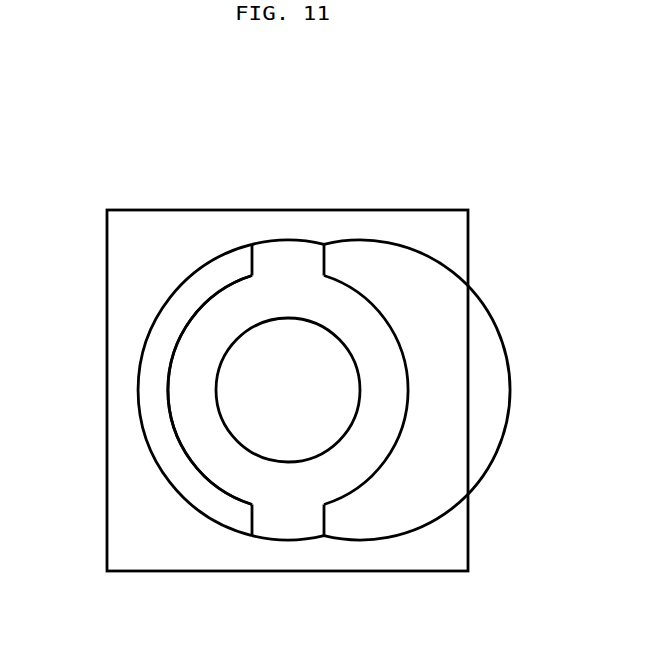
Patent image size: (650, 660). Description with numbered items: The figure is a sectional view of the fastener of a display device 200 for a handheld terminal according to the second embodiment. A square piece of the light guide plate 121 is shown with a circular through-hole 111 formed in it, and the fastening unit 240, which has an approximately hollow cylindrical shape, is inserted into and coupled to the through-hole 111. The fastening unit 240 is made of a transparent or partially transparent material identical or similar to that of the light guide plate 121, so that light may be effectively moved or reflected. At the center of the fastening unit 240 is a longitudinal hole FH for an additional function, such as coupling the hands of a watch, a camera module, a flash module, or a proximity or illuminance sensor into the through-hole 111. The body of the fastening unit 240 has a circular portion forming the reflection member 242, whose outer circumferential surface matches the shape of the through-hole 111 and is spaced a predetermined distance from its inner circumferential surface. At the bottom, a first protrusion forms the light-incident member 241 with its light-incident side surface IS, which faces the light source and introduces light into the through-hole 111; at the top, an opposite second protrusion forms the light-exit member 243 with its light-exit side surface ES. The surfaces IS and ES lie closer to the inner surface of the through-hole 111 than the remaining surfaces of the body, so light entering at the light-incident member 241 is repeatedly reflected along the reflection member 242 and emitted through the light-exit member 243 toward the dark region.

The display device 200 is at (73, 144).
The light guide plate 121 is at (442, 247).
The through-hole 111 is at (398, 506).
The fastening unit 240 is at (210, 290).
The light-incident member 241 is at (286, 522).
The reflection member 242 is at (192, 388).
The light-exit member 243 is at (288, 262).
The light-exit side surface ES is at (293, 250).
The light-incident side surface IS is at (302, 542).
The hole FH is at (340, 386).